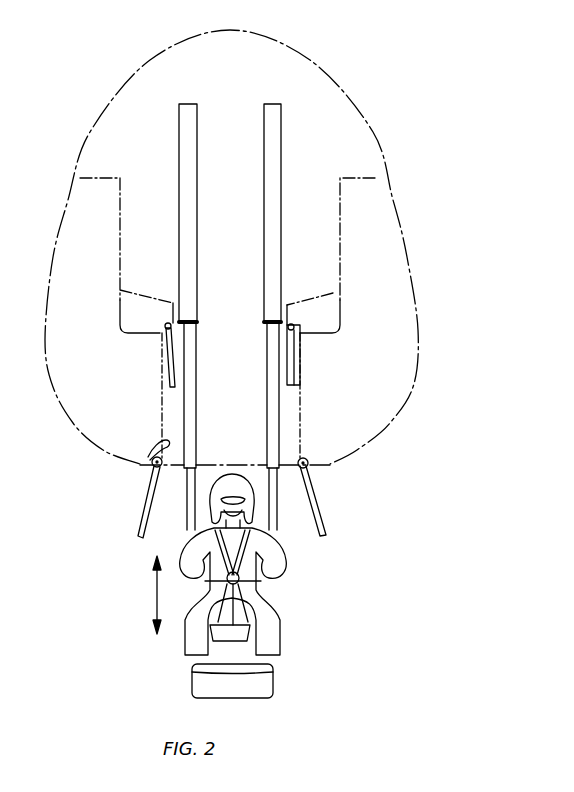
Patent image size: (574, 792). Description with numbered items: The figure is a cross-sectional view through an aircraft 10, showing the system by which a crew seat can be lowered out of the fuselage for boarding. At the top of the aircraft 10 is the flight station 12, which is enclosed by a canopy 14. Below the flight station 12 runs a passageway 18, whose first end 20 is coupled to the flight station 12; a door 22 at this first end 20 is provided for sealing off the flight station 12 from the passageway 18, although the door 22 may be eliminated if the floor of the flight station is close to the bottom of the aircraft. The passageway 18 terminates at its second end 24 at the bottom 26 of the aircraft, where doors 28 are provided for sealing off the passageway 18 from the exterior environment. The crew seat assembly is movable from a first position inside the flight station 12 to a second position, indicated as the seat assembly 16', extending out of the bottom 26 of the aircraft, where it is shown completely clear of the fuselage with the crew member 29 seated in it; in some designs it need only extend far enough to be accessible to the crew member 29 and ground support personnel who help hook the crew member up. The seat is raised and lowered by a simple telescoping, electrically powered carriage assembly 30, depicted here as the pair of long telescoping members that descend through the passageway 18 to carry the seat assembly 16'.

The aircraft 10 is at (434, 155).
The flight station 12 is at (312, 236).
The canopy 14 is at (340, 78).
The crew seat assembly in second position 16' is at (266, 663).
The passageway 18 is at (170, 412).
The first end 20 is at (300, 352).
The door 22 is at (170, 372).
The second end 24 is at (150, 456).
The bottom 26 is at (333, 467).
The doors 28 is at (138, 533).
The crew member 29 is at (272, 592).
The carriage assembly 30 is at (292, 146).